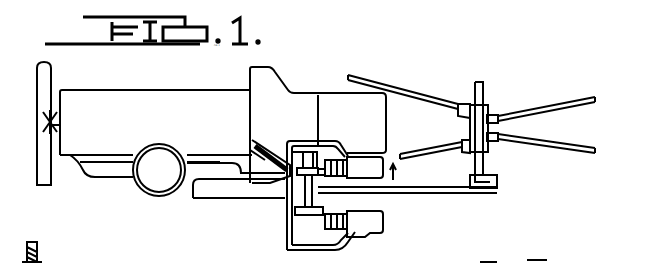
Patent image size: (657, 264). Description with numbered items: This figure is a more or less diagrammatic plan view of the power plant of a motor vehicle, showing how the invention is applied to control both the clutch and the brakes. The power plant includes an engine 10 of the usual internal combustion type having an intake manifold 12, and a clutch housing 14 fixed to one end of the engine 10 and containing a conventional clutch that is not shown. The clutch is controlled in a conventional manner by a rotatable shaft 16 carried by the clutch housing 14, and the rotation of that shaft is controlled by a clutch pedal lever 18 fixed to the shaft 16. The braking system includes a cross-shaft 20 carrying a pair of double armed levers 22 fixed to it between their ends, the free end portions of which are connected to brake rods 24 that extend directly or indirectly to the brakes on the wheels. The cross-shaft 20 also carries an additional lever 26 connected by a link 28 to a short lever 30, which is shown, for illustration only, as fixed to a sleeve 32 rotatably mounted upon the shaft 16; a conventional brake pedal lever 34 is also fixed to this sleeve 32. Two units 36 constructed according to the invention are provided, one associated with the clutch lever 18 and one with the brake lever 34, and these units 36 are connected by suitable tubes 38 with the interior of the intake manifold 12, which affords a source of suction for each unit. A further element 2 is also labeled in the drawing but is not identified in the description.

The member 2 is at (323, 150).
The body 10 is at (147, 133).
The handle 12 is at (118, 173).
The cab 14 is at (270, 82).
The link 16 is at (312, 147).
The frame 18 is at (312, 225).
The post 20 is at (487, 92).
The bracket 22 is at (473, 90).
The arm 24 is at (440, 92).
The base 26 is at (485, 176).
The rod 28 is at (408, 193).
The shaft 30 is at (313, 203).
The link 32 is at (257, 157).
The strut 34 is at (290, 160).
The cylinder 36 is at (371, 151).
The bracket 38 is at (225, 202).